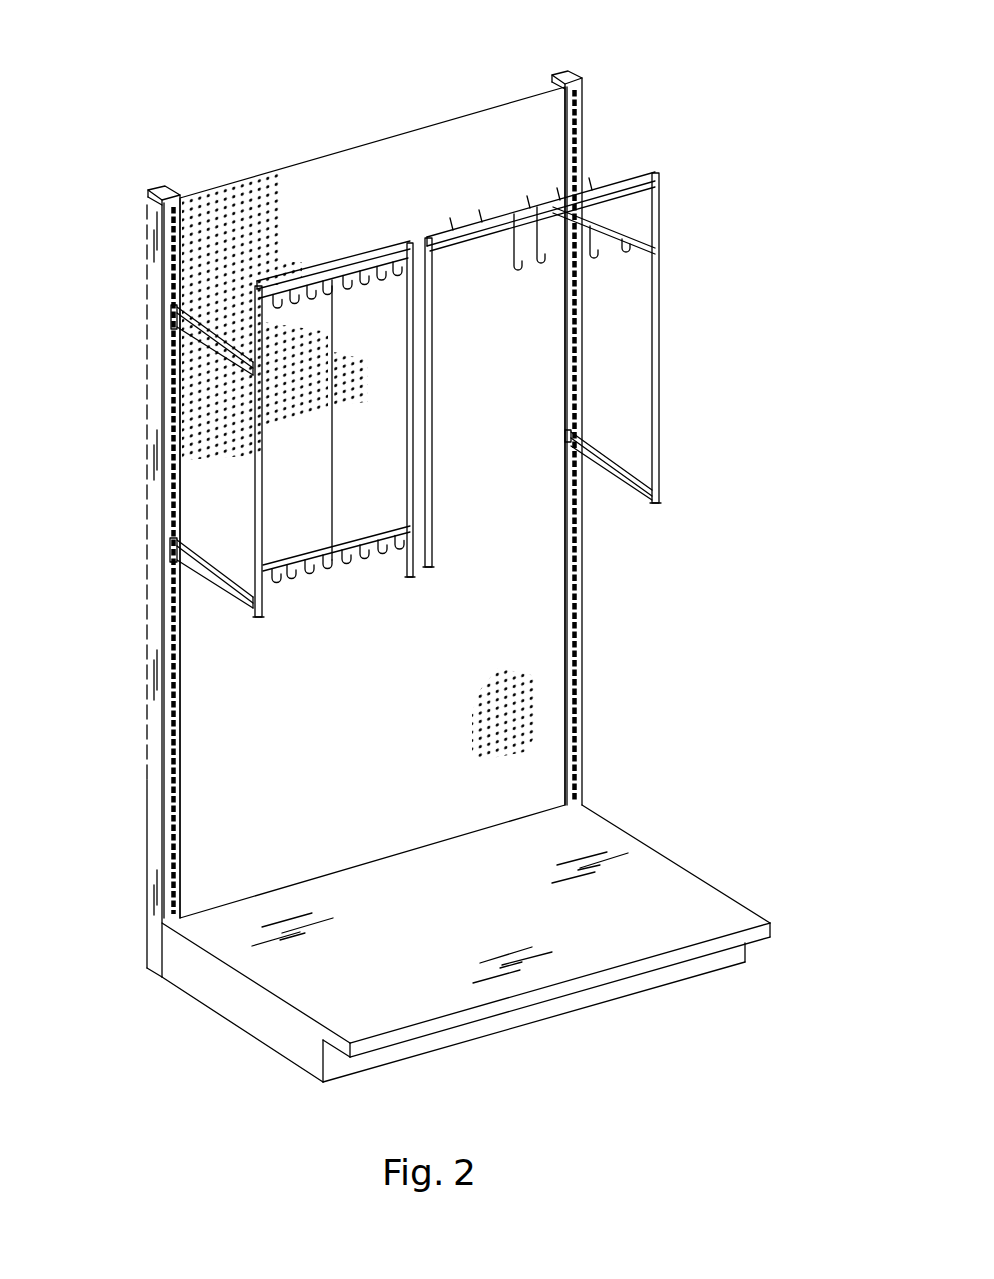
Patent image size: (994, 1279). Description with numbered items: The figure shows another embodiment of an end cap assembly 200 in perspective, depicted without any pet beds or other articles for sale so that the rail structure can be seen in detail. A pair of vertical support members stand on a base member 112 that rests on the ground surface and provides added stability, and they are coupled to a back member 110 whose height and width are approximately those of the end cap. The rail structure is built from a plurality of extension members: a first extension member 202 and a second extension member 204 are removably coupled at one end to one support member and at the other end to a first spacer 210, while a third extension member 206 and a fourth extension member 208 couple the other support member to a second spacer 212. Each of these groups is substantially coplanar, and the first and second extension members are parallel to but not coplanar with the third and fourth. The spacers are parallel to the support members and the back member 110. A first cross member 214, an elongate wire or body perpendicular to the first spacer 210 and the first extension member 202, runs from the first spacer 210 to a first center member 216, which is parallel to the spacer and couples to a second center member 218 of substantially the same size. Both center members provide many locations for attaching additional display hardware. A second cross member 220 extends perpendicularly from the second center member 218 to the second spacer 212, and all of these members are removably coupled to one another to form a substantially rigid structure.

The end cap assembly 200 is at (742, 110).
The back member 110 is at (408, 763).
The base member 112 is at (318, 990).
The first extension member 202 is at (203, 340).
The second extension member 204 is at (210, 578).
The third extension member 206 is at (610, 236).
The fourth extension member 208 is at (605, 468).
The first spacer 210 is at (257, 497).
The second spacer 212 is at (658, 391).
The first cross member 214 is at (377, 250).
The first center member 216 is at (406, 550).
The second center member 218 is at (433, 495).
The second cross member 220 is at (625, 176).